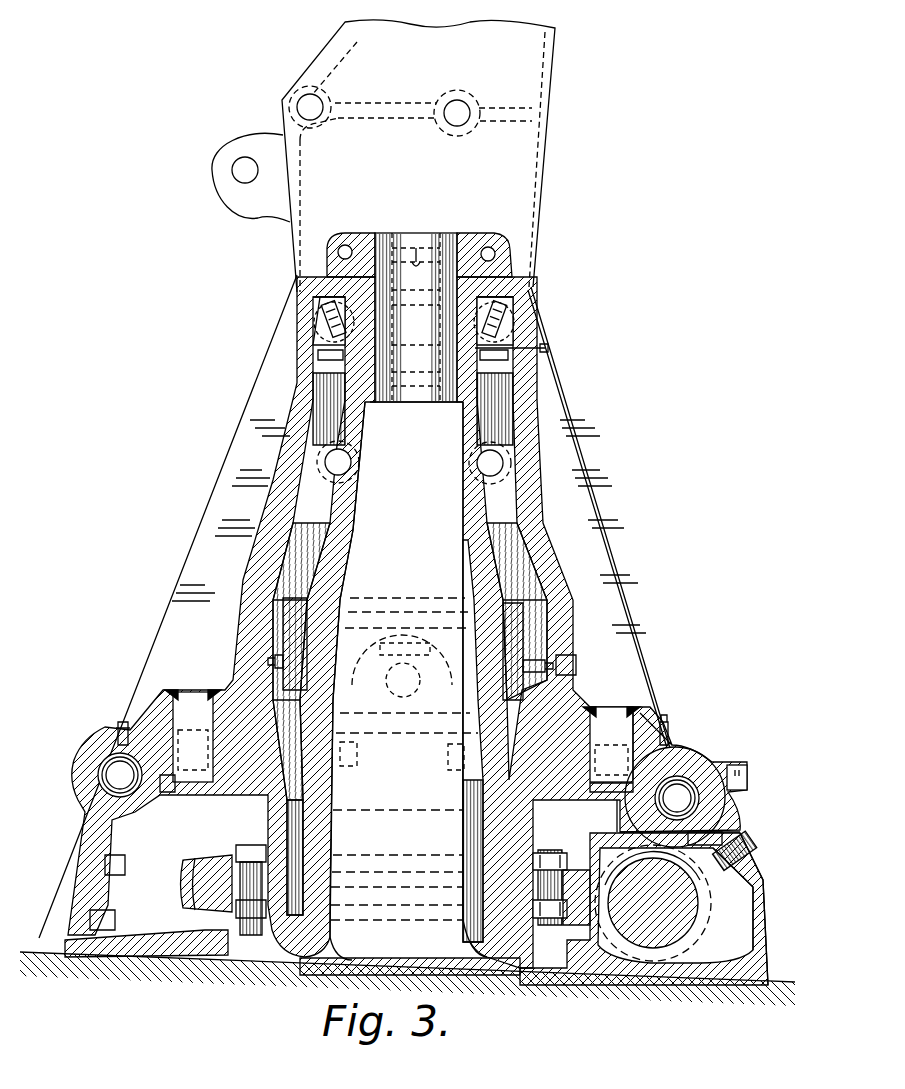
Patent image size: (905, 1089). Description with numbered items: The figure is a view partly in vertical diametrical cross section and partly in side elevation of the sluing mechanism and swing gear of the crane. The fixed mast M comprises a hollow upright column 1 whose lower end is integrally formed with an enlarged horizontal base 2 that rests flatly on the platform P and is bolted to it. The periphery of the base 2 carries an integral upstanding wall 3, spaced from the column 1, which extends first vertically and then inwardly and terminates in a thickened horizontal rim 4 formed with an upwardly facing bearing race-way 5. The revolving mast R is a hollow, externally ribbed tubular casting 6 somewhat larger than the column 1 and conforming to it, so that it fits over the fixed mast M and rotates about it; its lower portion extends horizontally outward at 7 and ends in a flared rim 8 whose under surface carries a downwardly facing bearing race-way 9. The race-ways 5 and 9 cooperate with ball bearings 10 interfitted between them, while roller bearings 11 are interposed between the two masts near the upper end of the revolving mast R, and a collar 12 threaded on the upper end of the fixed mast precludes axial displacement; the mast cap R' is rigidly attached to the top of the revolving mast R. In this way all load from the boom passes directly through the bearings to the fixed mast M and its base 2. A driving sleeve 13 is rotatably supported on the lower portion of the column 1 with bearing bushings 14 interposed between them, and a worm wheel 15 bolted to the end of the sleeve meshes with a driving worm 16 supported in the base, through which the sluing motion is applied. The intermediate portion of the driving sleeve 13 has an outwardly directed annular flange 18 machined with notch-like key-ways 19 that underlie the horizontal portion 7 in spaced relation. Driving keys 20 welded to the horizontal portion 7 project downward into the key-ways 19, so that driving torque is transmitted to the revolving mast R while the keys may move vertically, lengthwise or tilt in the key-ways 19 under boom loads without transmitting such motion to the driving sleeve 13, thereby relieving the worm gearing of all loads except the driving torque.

The mast cap R' is at (380, 156).
The revolving mast R is at (354, 606).
The collar 12 is at (500, 272).
The roller bearings 11 is at (507, 330).
The hollow tubular casting 6 is at (520, 438).
The hollow upright column 1 is at (483, 553).
The fixed mast M is at (495, 580).
The bearing bushings 14 is at (505, 676).
The driving sleeve 13 is at (528, 718).
The annular flange 18 is at (575, 740).
The key-ways 19 is at (225, 735).
The driving keys 20 is at (403, 737).
The horizontal portion 7 is at (640, 725).
The flared rim 8 is at (718, 737).
The downwardly facing bearing race-way 9 is at (713, 768).
The ball bearings 10 is at (677, 798).
The upwardly facing bearing race-way 5 is at (660, 827).
The driving worm 16 is at (662, 917).
The worm wheel 15 is at (580, 867).
The rim 4 is at (690, 833).
The upstanding wall 3 is at (760, 930).
The horizontal base 2 is at (630, 966).
The platform P is at (43, 953).